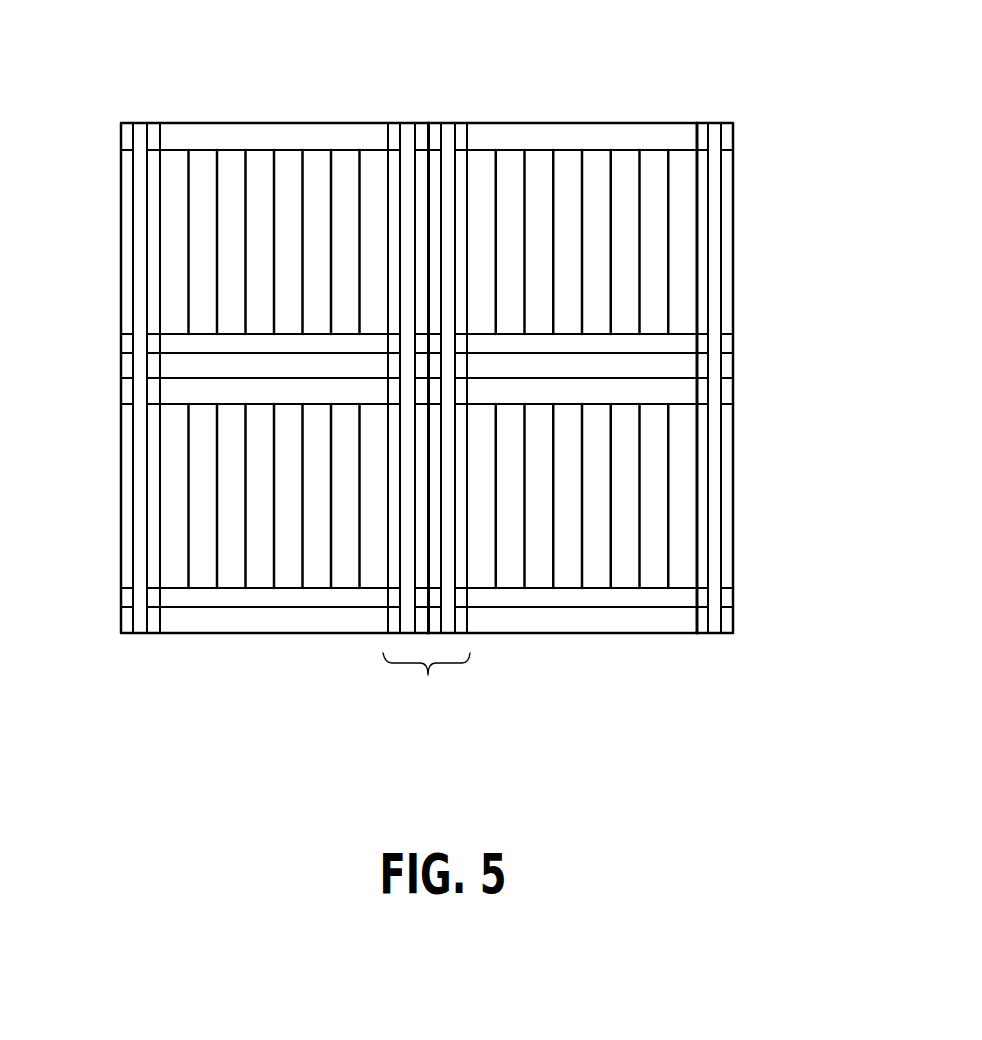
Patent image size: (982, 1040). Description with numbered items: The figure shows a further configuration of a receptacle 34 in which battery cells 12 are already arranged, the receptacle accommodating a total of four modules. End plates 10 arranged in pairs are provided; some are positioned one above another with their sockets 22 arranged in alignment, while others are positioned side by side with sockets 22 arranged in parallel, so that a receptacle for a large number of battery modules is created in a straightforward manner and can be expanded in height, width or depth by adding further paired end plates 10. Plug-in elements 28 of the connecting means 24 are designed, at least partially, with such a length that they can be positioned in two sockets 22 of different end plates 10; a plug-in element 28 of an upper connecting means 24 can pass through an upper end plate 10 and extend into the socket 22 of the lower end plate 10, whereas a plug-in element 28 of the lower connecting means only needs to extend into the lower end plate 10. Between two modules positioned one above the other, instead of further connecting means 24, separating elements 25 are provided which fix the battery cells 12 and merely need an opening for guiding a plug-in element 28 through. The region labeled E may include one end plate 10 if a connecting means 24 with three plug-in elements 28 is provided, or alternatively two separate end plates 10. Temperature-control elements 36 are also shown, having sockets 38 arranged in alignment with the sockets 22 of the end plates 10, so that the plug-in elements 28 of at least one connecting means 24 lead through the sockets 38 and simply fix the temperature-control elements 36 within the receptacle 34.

The end plate 10 is at (728, 181).
The battery cell 12 is at (204, 168).
The socket 22 is at (713, 233).
The connecting means 24 is at (572, 140).
The separating element 25 is at (728, 368).
The plug-in element 28 is at (139, 130).
The receptacle 34 is at (796, 86).
The temperature-control element 36 is at (728, 347).
The socket of temperature-control element 38 is at (410, 347).
The region E is at (426, 420).